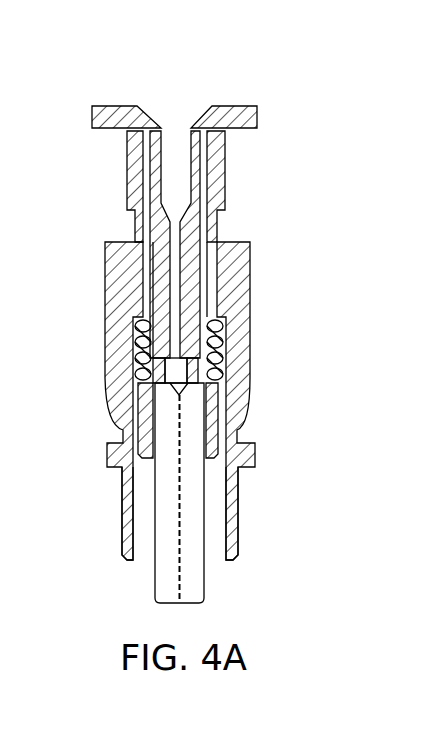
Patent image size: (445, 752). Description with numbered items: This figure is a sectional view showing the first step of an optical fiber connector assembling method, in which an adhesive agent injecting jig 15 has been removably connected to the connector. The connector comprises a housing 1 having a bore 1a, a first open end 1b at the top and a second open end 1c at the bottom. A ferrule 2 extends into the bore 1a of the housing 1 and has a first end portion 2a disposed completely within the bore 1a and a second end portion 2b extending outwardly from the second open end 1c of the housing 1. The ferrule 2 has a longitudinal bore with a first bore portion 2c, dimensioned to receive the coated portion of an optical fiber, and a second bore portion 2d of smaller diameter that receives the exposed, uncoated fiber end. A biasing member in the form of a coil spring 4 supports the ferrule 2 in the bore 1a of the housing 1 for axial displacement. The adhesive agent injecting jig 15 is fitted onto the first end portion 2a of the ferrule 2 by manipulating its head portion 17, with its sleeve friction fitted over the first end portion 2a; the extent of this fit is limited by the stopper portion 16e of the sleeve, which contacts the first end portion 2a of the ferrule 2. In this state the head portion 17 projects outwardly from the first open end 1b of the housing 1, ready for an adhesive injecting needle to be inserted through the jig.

The housing 1 is at (243, 283).
The bore 1a is at (205, 258).
The first open end 1b is at (128, 140).
The second open end 1c is at (207, 573).
The ferrule 2 is at (335, 288).
The first end portion 2a is at (200, 237).
The second end portion 2b is at (193, 520).
The first bore portion 2c is at (178, 370).
The second bore portion 2d is at (163, 565).
The coil spring 4 is at (142, 345).
The adhesive agent injecting jig 15 is at (246, 142).
The stopper portion 16e is at (157, 270).
The head portion 17 is at (257, 113).